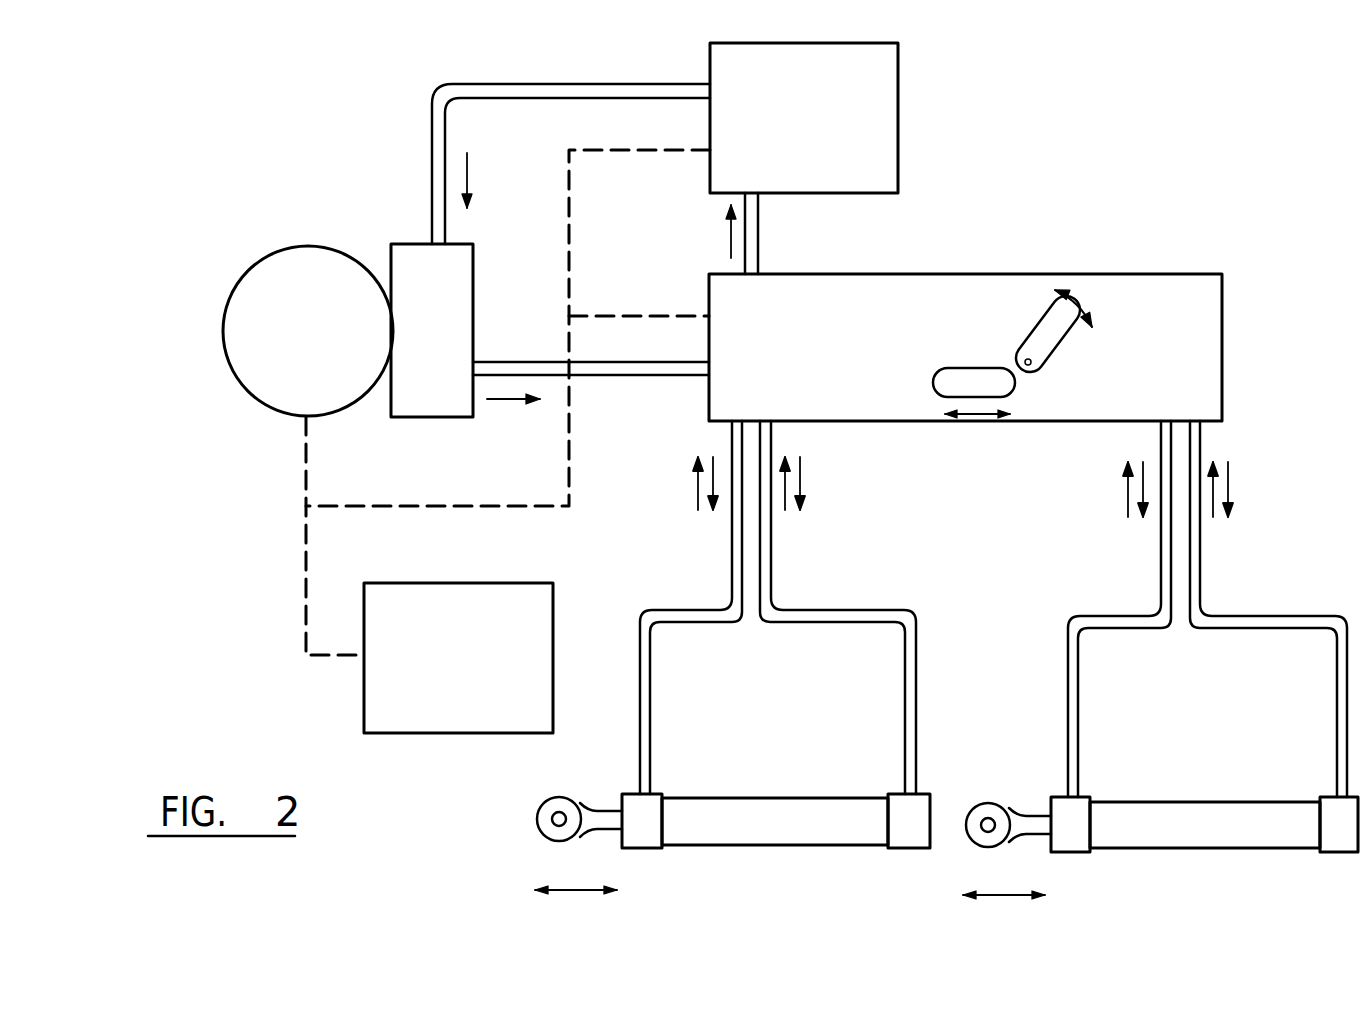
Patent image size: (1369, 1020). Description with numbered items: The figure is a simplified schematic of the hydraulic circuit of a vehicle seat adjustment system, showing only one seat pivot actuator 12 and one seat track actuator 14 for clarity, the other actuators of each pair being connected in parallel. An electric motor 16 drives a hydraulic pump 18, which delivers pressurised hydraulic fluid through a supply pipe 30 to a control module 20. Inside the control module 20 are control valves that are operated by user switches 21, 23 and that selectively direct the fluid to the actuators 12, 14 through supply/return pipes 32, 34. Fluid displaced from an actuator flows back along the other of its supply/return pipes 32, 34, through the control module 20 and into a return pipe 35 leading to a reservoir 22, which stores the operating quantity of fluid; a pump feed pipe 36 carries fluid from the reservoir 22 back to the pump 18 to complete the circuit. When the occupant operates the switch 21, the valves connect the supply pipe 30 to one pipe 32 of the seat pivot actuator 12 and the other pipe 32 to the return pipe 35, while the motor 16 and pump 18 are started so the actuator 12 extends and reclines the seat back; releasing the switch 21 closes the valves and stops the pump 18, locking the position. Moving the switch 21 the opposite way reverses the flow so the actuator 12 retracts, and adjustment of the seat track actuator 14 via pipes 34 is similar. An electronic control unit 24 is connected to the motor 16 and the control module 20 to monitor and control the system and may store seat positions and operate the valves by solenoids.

The seat pivot actuator 12 is at (786, 836).
The seat track actuator 14 is at (1216, 840).
The electric motor 16 is at (318, 344).
The hydraulic pump 18 is at (445, 344).
The control module 20 is at (1143, 293).
The switch 21 is at (1045, 340).
The reservoir 22 is at (821, 128).
The switch 23 is at (973, 385).
The electronic control unit 24 is at (475, 671).
The supply pipe 30 is at (617, 368).
The supply/return pipes 32 is at (732, 553).
The supply/return pipes 34 is at (1160, 558).
The return pipe 35 is at (760, 232).
The pump feed pipe 36 is at (438, 143).